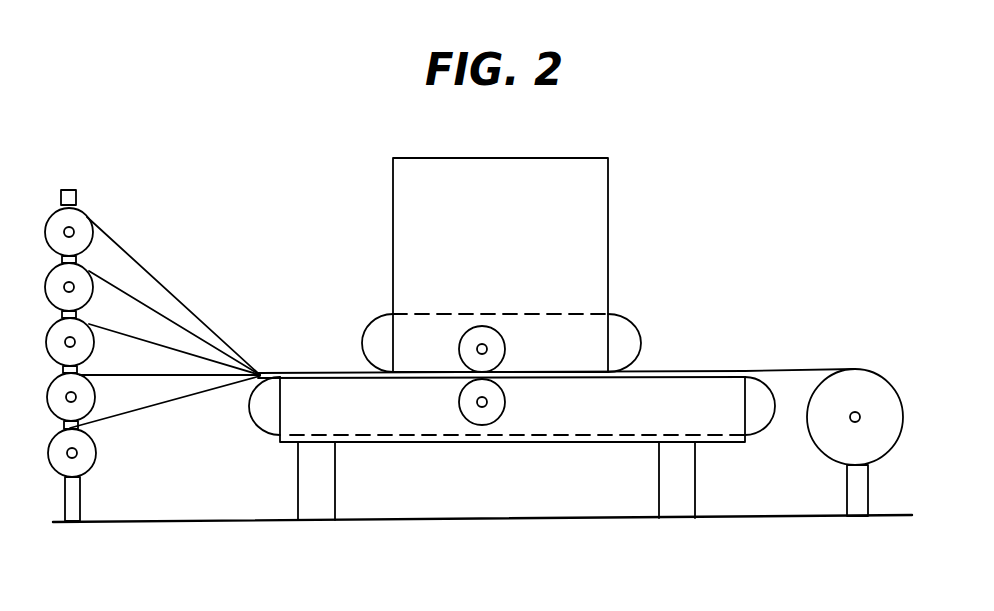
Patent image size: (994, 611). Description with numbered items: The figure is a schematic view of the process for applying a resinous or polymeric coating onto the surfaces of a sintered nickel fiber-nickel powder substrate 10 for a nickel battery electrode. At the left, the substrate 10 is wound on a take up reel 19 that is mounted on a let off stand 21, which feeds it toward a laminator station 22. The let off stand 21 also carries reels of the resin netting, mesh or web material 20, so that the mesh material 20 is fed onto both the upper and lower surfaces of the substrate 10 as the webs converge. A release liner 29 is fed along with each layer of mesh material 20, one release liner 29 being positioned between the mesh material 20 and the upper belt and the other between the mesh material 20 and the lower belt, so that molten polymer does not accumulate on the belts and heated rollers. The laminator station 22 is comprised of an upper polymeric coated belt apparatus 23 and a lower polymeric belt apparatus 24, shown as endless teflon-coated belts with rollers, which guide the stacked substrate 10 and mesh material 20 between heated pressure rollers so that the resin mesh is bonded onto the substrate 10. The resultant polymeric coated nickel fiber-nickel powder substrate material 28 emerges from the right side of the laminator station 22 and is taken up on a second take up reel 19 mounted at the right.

The sintered nickel fiber-nickel powder substrate 10 is at (160, 348).
The take up reel 19 is at (93, 339).
The polymeric mesh material 20 is at (143, 308).
The let off stand 21 is at (77, 197).
The laminator station 22 is at (362, 245).
The upper polymeric coated belt apparatus 23 is at (370, 333).
The lower polymeric belt apparatus 24 is at (244, 412).
The polymeric coated nickel fiber-nickel powder substrate material 28 is at (785, 369).
The release liner 29 is at (122, 252).